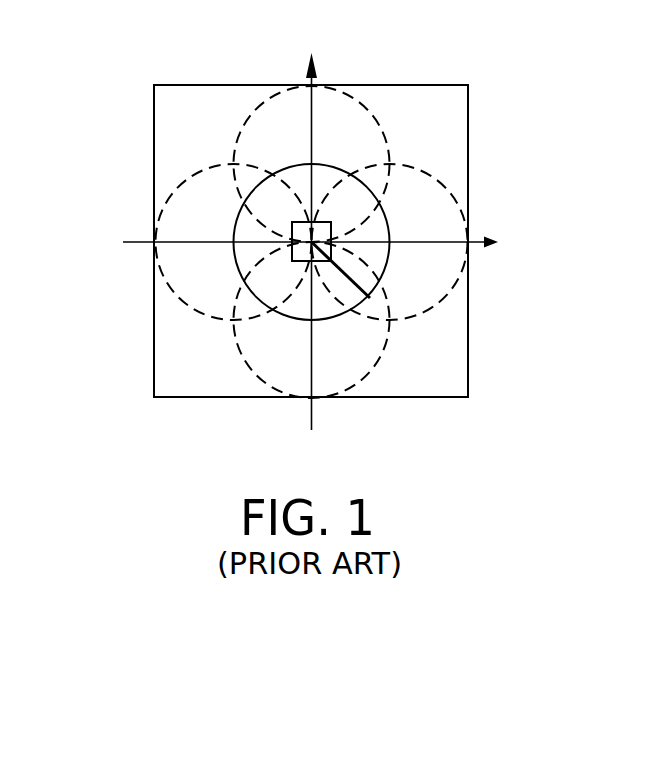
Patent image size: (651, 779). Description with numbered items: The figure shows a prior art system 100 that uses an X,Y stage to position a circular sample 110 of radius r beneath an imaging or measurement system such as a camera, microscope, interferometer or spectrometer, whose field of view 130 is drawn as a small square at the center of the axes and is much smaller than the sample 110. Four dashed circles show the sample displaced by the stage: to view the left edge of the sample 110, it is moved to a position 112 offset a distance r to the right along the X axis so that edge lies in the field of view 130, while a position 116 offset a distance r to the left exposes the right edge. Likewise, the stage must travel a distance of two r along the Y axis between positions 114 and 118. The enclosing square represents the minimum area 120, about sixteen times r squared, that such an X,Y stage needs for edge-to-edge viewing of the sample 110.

The system 100 is at (117, 60).
The circular sample 110 is at (389, 228).
The position for viewing left edge 112 is at (455, 200).
The position along Y axis 114 is at (353, 93).
The position for viewing right edge 116 is at (166, 283).
The position along Y axis 118 is at (253, 378).
The minimum area 120 is at (437, 85).
The field of view 130 is at (292, 260).